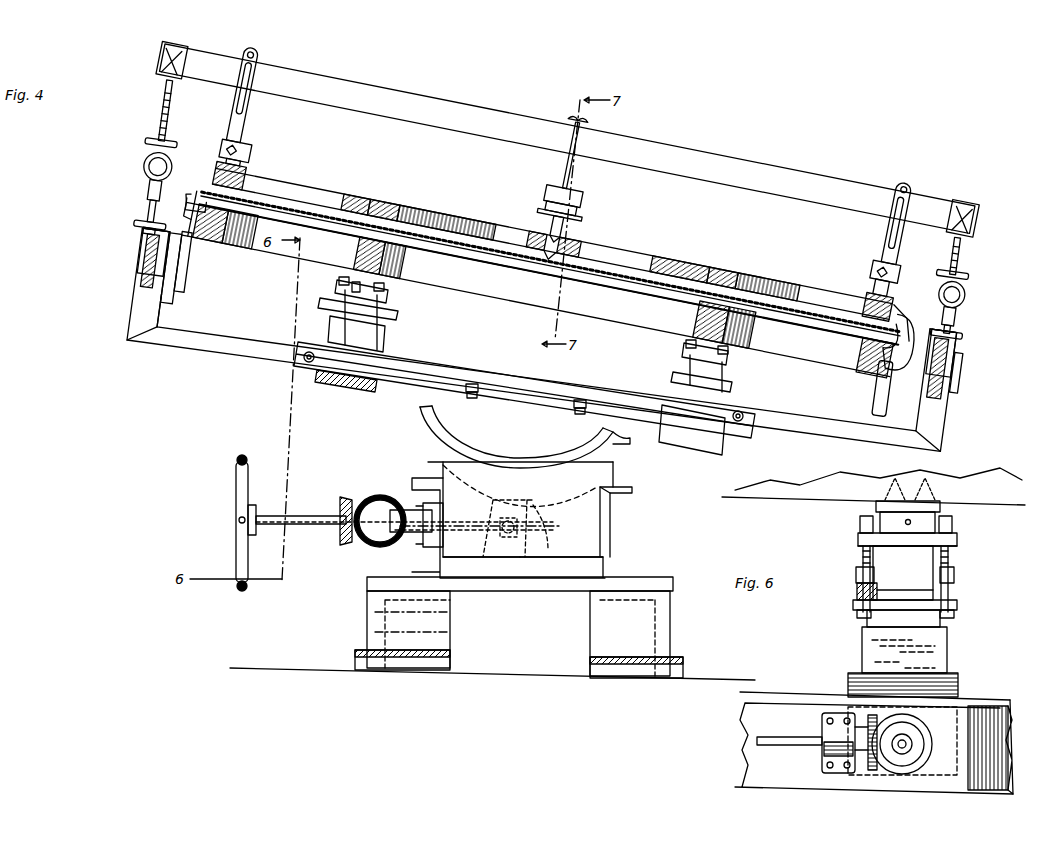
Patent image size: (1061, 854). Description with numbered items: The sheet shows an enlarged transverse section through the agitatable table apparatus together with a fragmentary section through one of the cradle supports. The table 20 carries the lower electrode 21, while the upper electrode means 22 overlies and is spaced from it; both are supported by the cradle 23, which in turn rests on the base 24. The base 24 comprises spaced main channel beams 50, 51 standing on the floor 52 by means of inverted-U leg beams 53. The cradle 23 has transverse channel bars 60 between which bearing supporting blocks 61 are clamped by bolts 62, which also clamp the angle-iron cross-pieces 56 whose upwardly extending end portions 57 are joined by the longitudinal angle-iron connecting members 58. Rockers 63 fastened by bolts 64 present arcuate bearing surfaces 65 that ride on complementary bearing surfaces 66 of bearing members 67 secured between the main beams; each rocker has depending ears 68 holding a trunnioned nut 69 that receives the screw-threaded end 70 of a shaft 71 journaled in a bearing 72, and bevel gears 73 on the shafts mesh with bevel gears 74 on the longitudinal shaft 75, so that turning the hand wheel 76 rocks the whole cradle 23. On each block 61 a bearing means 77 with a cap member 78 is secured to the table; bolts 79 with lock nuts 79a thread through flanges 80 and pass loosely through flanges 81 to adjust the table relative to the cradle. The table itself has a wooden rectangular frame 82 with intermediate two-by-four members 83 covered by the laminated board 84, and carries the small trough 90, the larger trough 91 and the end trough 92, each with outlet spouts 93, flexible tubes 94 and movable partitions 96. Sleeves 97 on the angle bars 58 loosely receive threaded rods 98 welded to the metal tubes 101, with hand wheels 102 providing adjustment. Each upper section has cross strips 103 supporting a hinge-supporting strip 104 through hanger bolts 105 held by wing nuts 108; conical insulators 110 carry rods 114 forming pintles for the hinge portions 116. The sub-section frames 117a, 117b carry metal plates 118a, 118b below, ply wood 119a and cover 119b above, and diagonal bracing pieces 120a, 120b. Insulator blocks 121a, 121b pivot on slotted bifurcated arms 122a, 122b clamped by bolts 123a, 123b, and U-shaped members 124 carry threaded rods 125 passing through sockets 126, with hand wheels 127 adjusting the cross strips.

In FIG. 4, the table 20 is at (230, 272).
In FIG. 4, the electrode 21 is at (260, 240).
In FIG. 4, the upper electrode means 22 is at (330, 193).
In FIG. 4, the cradle 23 is at (392, 404).
In FIG. 4, the base 24 is at (408, 483).
In FIG. 4, the main channel beam 50 is at (432, 572).
In FIG. 6, the main channel beam 50 is at (748, 712).
In FIG. 4, the main channel beam 51 is at (604, 575).
In FIG. 4, the floor 52 is at (300, 666).
In FIG. 4, the channel beam 53 is at (518, 588).
In FIG. 4, the angle-iron cross-piece 56 is at (165, 350).
In FIG. 6, the angle-iron cross-piece 56 is at (855, 588).
In FIG. 4, the end portion 57 is at (138, 298).
In FIG. 4, the angle-iron connecting member 58 is at (140, 250).
In FIG. 4, the channel bar 60 is at (412, 360).
In FIG. 6, the channel bar 60 is at (856, 570).
In FIG. 4, the bearing supporting block 61 is at (345, 333).
In FIG. 6, the bearing supporting block 61 is at (888, 605).
In FIG. 4, the bolt 62 is at (309, 364).
In FIG. 4, the rocker 63 is at (418, 436).
In FIG. 6, the rocker 63 is at (860, 655).
In FIG. 4, the bolt 64 is at (466, 392).
In FIG. 6, the bolt 64 is at (858, 616).
In FIG. 4, the arcuate bearing surface 65 is at (428, 446).
In FIG. 6, the arcuate bearing surface 65 is at (930, 652).
In FIG. 4, the bearing surface 66 is at (612, 500).
In FIG. 4, the bearing member 67 is at (590, 540).
In FIG. 6, the bearing member 67 is at (848, 686).
In FIG. 4, the ear 68 is at (481, 572).
In FIG. 4, the nut 69 is at (561, 576).
In FIG. 4, the screw-threaded end 70 is at (545, 530).
In FIG. 4, the shaft 71 is at (318, 526).
In FIG. 6, the shaft 71 is at (908, 740).
In FIG. 4, the bearing 72 is at (436, 516).
In FIG. 4, the bevel gear 73 is at (348, 540).
In FIG. 6, the bevel gear 73 is at (920, 753).
In FIG. 4, the bevel gear 74 is at (372, 548).
In FIG. 6, the bevel gear 74 is at (860, 718).
In FIG. 6, the shaft 75 is at (776, 746).
In FIG. 4, the hand wheel 76 is at (236, 556).
In FIG. 4, the bearing means 77 is at (336, 296).
In FIG. 6, the bearing means 77 is at (945, 510).
In FIG. 4, the cap member 78 is at (392, 300).
In FIG. 6, the cap member 78 is at (880, 506).
In FIG. 4, the bolt 79 is at (380, 334).
In FIG. 6, the bolt 79 is at (860, 548).
In FIG. 4, the lock nut 79a is at (340, 284).
In FIG. 6, the lock nut 79a is at (858, 524).
In FIG. 4, the flange 80 is at (398, 316).
In FIG. 6, the flange 80 is at (958, 538).
In FIG. 4, the flange 81 is at (322, 315).
In FIG. 6, the flange 81 is at (862, 536).
In FIG. 4, the rectangular frame 82 is at (205, 280).
In FIG. 4, the intermediate two-by-four member 83 is at (398, 268).
In FIG. 6, the intermediate two-by-four member 83 is at (995, 496).
In FIG. 4, the laminated board 84 is at (478, 278).
In FIG. 4, the trough 90 is at (190, 192).
In FIG. 4, the trough 91 is at (942, 376).
In FIG. 4, the trough 92 is at (186, 282).
In FIG. 4, the outlet spout 93 is at (182, 250).
In FIG. 4, the tube 94 is at (184, 268).
In FIG. 4, the movable partition 96 is at (190, 215).
In FIG. 4, the sleeve 97 is at (136, 272).
In FIG. 4, the threaded rod 98 is at (140, 212).
In FIG. 4, the metal tube 101 is at (144, 168).
In FIG. 4, the hand wheel 102 is at (136, 228).
In FIG. 4, the cross strip 103 is at (452, 100).
In FIG. 4, the hinge-supporting strip 104 is at (580, 197).
In FIG. 4, the hanger bolt 105 is at (565, 172).
In FIG. 4, the wing nut 108 is at (595, 123).
In FIG. 4, the conical insulator 110 is at (572, 212).
In FIG. 4, the rod 114 is at (570, 228).
In FIG. 4, the hinge portion 116 is at (540, 236).
In FIG. 4, the frame 117a is at (246, 180).
In FIG. 4, the frame 117b is at (590, 236).
In FIG. 4, the metal plate 118a is at (360, 194).
In FIG. 4, the metal plate 118b is at (660, 262).
In FIG. 4, the ply wood 119a is at (450, 208).
In FIG. 4, the cover 119b is at (780, 285).
In FIG. 4, the diagonal bracing piece 120a is at (390, 206).
In FIG. 4, the diagonal bracing piece 120b is at (722, 272).
In FIG. 4, the insulator block 121a is at (250, 160).
In FIG. 4, the insulator block 121b is at (880, 278).
In FIG. 4, the slotted bifurcated arm 122a is at (250, 118).
In FIG. 4, the slotted bifurcated arm 122b is at (885, 226).
In FIG. 4, the bolt 123a is at (258, 68).
In FIG. 4, the bolt 123b is at (888, 185).
In FIG. 4, the U-shaped member 124 is at (160, 62).
In FIG. 4, the threaded rod 125 is at (162, 110).
In FIG. 4, the socket 126 is at (155, 186).
In FIG. 4, the hand wheel 127 is at (145, 145).